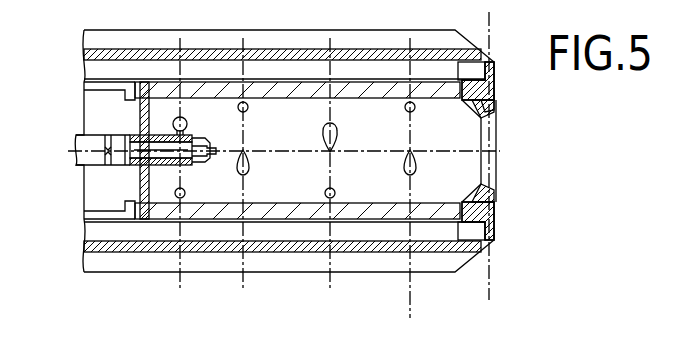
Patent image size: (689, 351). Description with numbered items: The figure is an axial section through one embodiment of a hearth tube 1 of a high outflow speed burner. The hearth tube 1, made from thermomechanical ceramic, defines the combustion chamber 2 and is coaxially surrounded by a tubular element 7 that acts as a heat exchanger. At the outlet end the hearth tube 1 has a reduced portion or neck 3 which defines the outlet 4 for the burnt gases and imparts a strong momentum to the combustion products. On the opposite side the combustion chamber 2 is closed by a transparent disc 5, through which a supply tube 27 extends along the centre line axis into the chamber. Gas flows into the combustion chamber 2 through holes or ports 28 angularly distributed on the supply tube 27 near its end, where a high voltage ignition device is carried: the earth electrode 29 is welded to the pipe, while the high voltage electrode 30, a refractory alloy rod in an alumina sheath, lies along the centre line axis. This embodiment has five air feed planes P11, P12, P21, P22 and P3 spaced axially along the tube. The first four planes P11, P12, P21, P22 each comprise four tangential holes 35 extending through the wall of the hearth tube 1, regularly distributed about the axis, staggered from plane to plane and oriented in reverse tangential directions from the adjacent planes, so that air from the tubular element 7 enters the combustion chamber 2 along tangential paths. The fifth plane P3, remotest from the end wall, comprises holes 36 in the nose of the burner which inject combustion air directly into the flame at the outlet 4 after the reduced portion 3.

The tubular element 7 is at (322, 33).
The hearth tube 1 is at (375, 96).
The transparent disc 5 is at (140, 116).
The supply tube 27 is at (90, 160).
The holes or ports 28 is at (190, 165).
The earth electrode 29 is at (198, 132).
The combustion chamber 2 is at (312, 146).
The tangential holes 35 is at (336, 138).
The high voltage electrode 30 is at (249, 165).
The reduced portion or neck 3 is at (470, 110).
The holes 36 is at (487, 103).
The outlet 4 is at (492, 163).
The air feed plane P11 is at (180, 290).
The air feed plane P12 is at (243, 290).
The air feed plane P21 is at (330, 288).
The air feed plane P22 is at (410, 288).
The air feed plane P3 is at (489, 285).